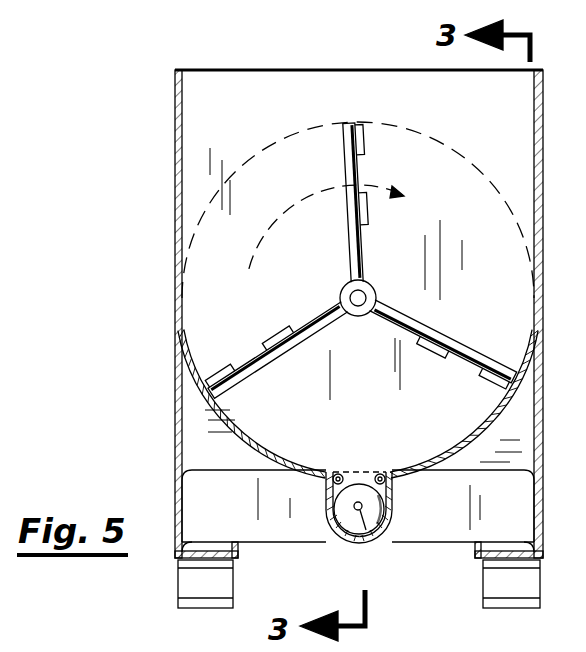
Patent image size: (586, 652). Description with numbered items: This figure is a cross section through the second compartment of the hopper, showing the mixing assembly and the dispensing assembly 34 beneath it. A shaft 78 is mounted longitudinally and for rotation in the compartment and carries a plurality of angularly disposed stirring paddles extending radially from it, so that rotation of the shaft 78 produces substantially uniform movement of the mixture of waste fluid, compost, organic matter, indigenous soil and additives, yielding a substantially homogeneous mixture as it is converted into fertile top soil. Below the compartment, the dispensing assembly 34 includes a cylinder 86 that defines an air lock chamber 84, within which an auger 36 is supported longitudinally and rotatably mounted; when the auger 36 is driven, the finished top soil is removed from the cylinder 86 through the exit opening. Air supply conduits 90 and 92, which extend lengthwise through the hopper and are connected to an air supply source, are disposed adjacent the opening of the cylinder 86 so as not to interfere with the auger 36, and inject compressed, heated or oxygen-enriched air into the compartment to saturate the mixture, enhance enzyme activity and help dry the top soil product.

The shaft 78 is at (340, 298).
The dispensing assembly 34 is at (364, 468).
The air supply conduit 90 is at (335, 473).
The air supply conduit 92 is at (383, 474).
The air lock chamber 84 is at (330, 488).
The cylinder 86 is at (390, 523).
The auger 36 is at (345, 517).